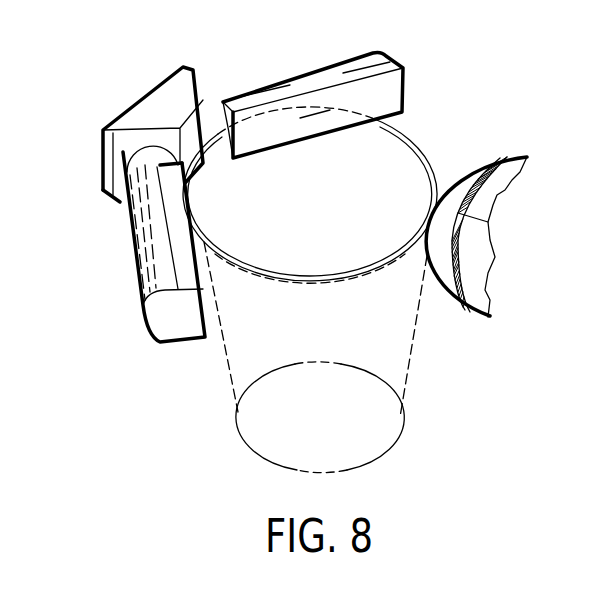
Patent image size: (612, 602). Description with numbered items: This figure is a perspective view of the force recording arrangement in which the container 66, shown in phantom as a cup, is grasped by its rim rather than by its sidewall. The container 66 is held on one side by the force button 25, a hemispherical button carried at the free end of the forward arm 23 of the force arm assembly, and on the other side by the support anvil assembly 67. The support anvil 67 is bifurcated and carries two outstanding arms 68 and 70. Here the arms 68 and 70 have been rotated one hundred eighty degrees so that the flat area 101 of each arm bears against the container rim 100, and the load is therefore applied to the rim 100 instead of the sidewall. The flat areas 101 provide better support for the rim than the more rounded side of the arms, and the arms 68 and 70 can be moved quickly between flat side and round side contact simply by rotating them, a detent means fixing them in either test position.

The forward arm 23 is at (490, 297).
The force button 25 is at (458, 165).
The container 66 is at (398, 425).
The support anvil assembly 67 is at (128, 110).
The arm 68 is at (317, 70).
The arm 70 is at (138, 287).
The rim 100 is at (412, 138).
The flat area 101 is at (385, 92).